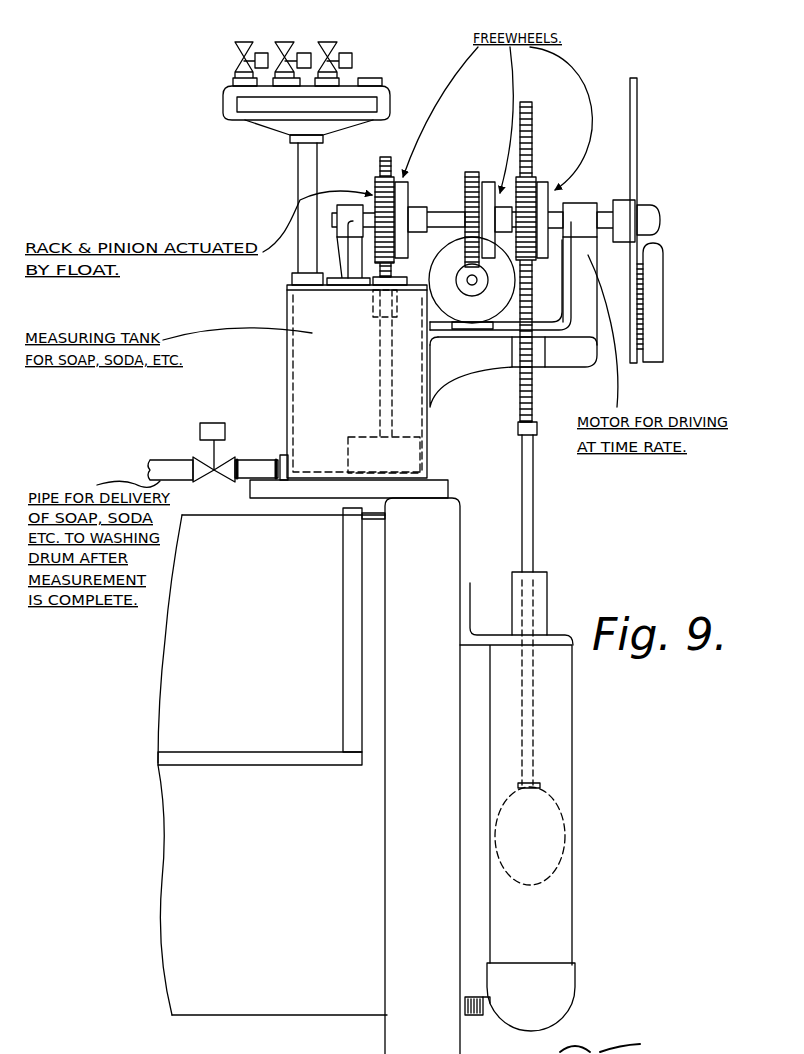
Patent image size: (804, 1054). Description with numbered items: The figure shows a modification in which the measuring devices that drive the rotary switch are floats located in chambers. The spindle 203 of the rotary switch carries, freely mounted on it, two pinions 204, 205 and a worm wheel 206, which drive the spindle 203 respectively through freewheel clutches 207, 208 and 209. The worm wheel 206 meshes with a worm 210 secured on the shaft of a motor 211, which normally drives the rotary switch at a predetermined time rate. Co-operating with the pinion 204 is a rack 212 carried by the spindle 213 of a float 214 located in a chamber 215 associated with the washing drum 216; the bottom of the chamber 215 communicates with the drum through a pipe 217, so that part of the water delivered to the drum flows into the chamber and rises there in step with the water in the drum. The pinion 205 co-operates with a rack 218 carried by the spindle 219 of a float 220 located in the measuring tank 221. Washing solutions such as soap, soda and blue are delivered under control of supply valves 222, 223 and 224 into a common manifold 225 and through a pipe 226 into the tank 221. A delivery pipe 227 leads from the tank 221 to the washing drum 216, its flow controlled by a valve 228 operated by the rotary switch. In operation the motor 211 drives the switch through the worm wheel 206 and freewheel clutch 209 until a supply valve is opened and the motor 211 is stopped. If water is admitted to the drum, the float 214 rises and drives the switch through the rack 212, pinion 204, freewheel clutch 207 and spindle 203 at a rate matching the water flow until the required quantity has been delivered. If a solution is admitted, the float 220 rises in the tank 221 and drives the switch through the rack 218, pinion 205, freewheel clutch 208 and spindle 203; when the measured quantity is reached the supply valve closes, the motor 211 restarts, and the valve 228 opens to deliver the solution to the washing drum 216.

The spindle 203 is at (607, 214).
The pinion 204 is at (533, 176).
The pinion 205 is at (377, 184).
The worm wheel 206 is at (472, 174).
The freewheel clutch 207 is at (547, 190).
The freewheel clutch 208 is at (399, 200).
The freewheel clutch 209 is at (503, 190).
The worm 210 is at (482, 308).
The motor 211 is at (483, 290).
The rack 212 is at (532, 113).
The spindle 213 is at (534, 505).
The float 214 is at (566, 820).
The chamber 215 is at (560, 927).
The washing drum 216 is at (310, 1010).
The pipe 217 is at (476, 1015).
The rack 218 is at (382, 159).
The spindle 219 is at (380, 360).
The float 220 is at (348, 437).
The tank 221 is at (297, 305).
The supply valve 222 is at (245, 46).
The supply valve 223 is at (287, 46).
The supply valve 224 is at (331, 46).
The common manifold 225 is at (257, 108).
The pipe 226 is at (300, 175).
The delivery pipe 227 is at (250, 463).
The valve 228 is at (213, 457).